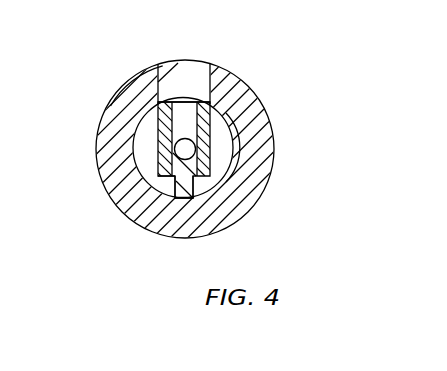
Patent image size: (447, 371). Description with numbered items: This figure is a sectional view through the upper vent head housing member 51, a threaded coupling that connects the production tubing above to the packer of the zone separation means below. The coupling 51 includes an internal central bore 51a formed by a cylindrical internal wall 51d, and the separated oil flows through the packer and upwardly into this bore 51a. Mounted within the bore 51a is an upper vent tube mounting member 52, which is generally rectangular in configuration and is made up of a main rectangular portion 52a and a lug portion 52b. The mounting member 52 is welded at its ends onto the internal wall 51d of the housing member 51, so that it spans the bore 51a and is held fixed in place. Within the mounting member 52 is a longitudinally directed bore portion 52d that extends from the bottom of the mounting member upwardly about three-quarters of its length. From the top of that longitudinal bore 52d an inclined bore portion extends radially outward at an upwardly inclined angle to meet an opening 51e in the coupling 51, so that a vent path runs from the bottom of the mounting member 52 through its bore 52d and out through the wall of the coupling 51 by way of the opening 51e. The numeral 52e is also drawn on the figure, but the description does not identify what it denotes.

The upper vent head housing member 51 is at (245, 97).
The central bore 51a is at (147, 160).
The cylindrical internal wall 51d is at (230, 141).
The opening 51e is at (181, 60).
The upper vent tube mounting member 52 is at (210, 165).
The main rectangular portion 52a is at (160, 196).
The lug portion 52b is at (176, 197).
The longitudinally directed bore portion 52d is at (176, 146).
The top face 52e is at (186, 100).